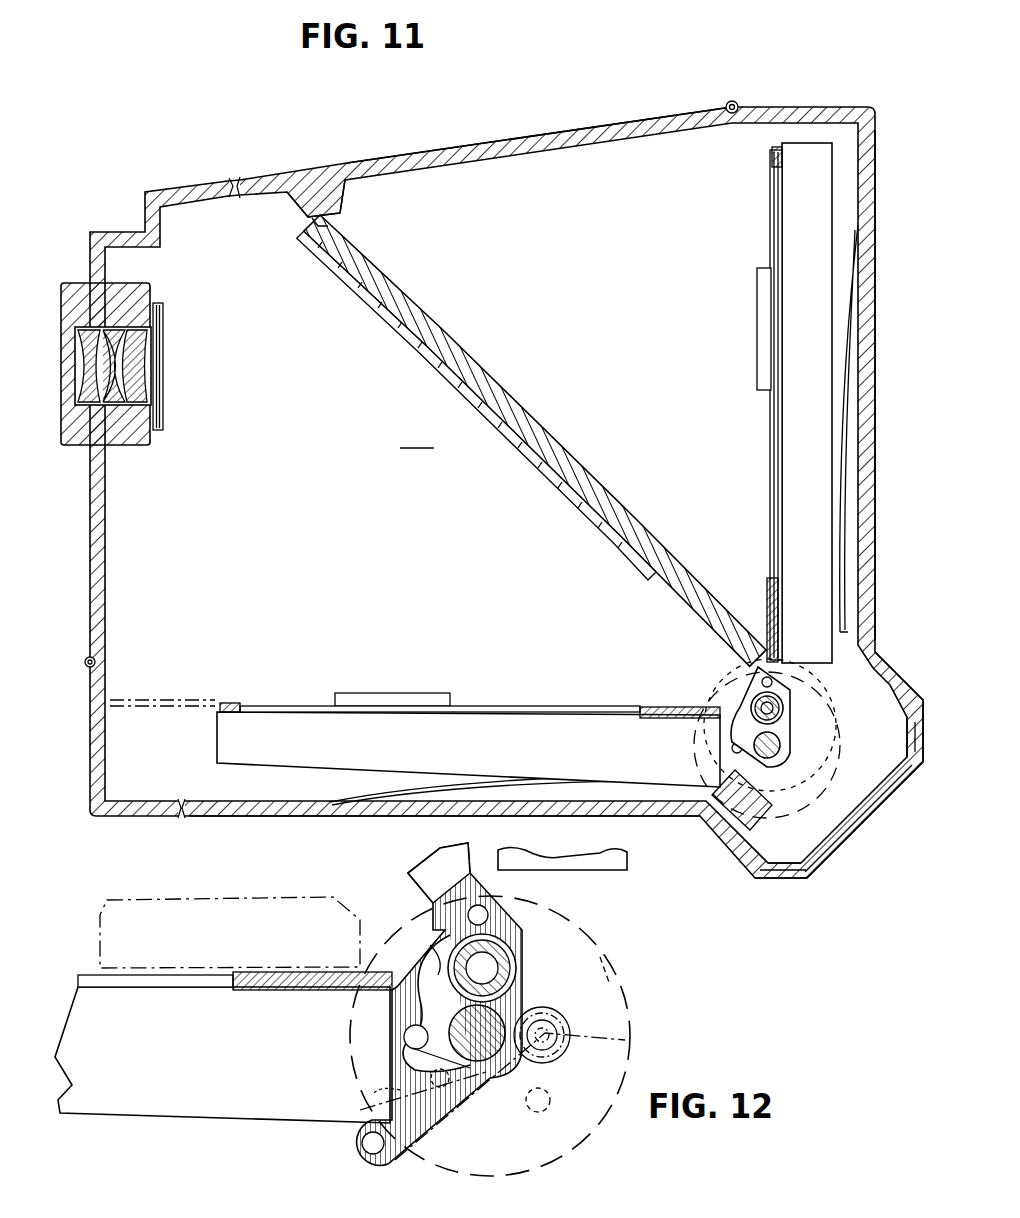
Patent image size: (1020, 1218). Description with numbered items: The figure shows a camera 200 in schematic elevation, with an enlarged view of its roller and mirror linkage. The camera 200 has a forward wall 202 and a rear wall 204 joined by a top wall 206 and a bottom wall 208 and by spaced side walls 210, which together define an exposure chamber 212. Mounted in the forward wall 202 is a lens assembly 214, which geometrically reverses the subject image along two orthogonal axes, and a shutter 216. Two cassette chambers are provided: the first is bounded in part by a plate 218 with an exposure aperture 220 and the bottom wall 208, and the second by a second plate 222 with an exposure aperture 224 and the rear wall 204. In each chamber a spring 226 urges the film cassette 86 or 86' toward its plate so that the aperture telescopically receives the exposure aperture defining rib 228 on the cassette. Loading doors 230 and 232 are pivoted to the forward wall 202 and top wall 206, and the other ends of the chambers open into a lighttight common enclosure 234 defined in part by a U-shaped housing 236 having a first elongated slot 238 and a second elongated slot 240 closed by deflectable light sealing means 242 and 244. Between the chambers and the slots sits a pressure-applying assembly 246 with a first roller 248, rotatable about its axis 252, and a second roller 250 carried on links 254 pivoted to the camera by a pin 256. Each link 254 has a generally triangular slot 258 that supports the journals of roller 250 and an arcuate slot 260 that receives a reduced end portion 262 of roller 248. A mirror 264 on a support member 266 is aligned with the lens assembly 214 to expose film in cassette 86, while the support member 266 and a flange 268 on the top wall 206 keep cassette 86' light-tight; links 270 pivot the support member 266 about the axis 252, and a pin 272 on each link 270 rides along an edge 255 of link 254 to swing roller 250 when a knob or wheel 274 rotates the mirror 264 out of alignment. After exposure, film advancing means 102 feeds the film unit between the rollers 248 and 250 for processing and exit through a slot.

In FIG. 11, the camera 200 is at (530, 115).
In FIG. 11, the forward wall 202 is at (90, 560).
In FIG. 11, the rear wall 204 is at (878, 388).
In FIG. 11, the top wall 206 is at (458, 140).
In FIG. 11, the bottom wall 208 is at (290, 818).
In FIG. 11, the side walls 210 is at (421, 436).
In FIG. 11, the exposure chamber 212 is at (272, 212).
In FIG. 11, the lens assembly 214 is at (82, 352).
In FIG. 11, the shutter 216 is at (165, 327).
In FIG. 11, the plate 218 is at (716, 712).
In FIG. 12, the plate 218 is at (439, 1004).
In FIG. 11, the exposure aperture 220 is at (628, 712).
In FIG. 11, the second plate 222 is at (765, 598).
In FIG. 11, the exposure aperture 224 is at (773, 570).
In FIG. 11, the spring 226 is at (850, 322).
In FIG. 11, the exposure aperture defining rib 228 is at (558, 705).
In FIG. 11, the loading door 230 is at (92, 742).
In FIG. 11, the loading door 232 is at (776, 106).
In FIG. 11, the lighttight common enclosure 234 is at (842, 806).
In FIG. 11, the U-shaped housing 236 is at (824, 868).
In FIG. 11, the first elongated slot 238 is at (912, 738).
In FIG. 11, the second elongated slot 240 is at (783, 870).
In FIG. 11, the light sealing means 242 is at (928, 700).
In FIG. 11, the light sealing means 244 is at (800, 878).
In FIG. 11, the pressure-applying assembly 246 is at (818, 756).
In FIG. 12, the pressure-applying assembly 246 is at (585, 980).
In FIG. 11, the first roller 248 is at (768, 762).
In FIG. 12, the first roller 248 is at (540, 1066).
In FIG. 11, the second roller 250 is at (785, 712).
In FIG. 12, the second roller 250 is at (518, 955).
In FIG. 12, the axis 252 is at (438, 1070).
In FIG. 12, the links 254 is at (378, 1098).
In FIG. 12, the edge 255 is at (400, 1080).
In FIG. 12, the pin 256 is at (362, 1143).
In FIG. 12, the first generally triangular shaped slot 258 is at (532, 964).
In FIG. 12, the arcuate slot 260 is at (420, 1010).
In FIG. 12, the reduced end portion 262 is at (414, 1049).
In FIG. 11, the mirror 264 is at (388, 325).
In FIG. 11, the support member 266 is at (538, 412).
In FIG. 12, the support member 266 is at (208, 897).
In FIG. 11, the flange 268 is at (342, 218).
In FIG. 12, the links 270 is at (475, 918).
In FIG. 12, the pin 272 is at (403, 1035).
In FIG. 11, the knob or wheel 274 is at (714, 668).
In FIG. 12, the knob or wheel 274 is at (620, 996).
In FIG. 11, the film cassette 86 is at (447, 749).
In FIG. 12, the film cassette 86 is at (222, 1049).
In FIG. 11, the film cassette 86' is at (775, 403).
In FIG. 12, the film cassette 86' is at (590, 852).
In FIG. 11, the film advancing means 102 is at (757, 320).